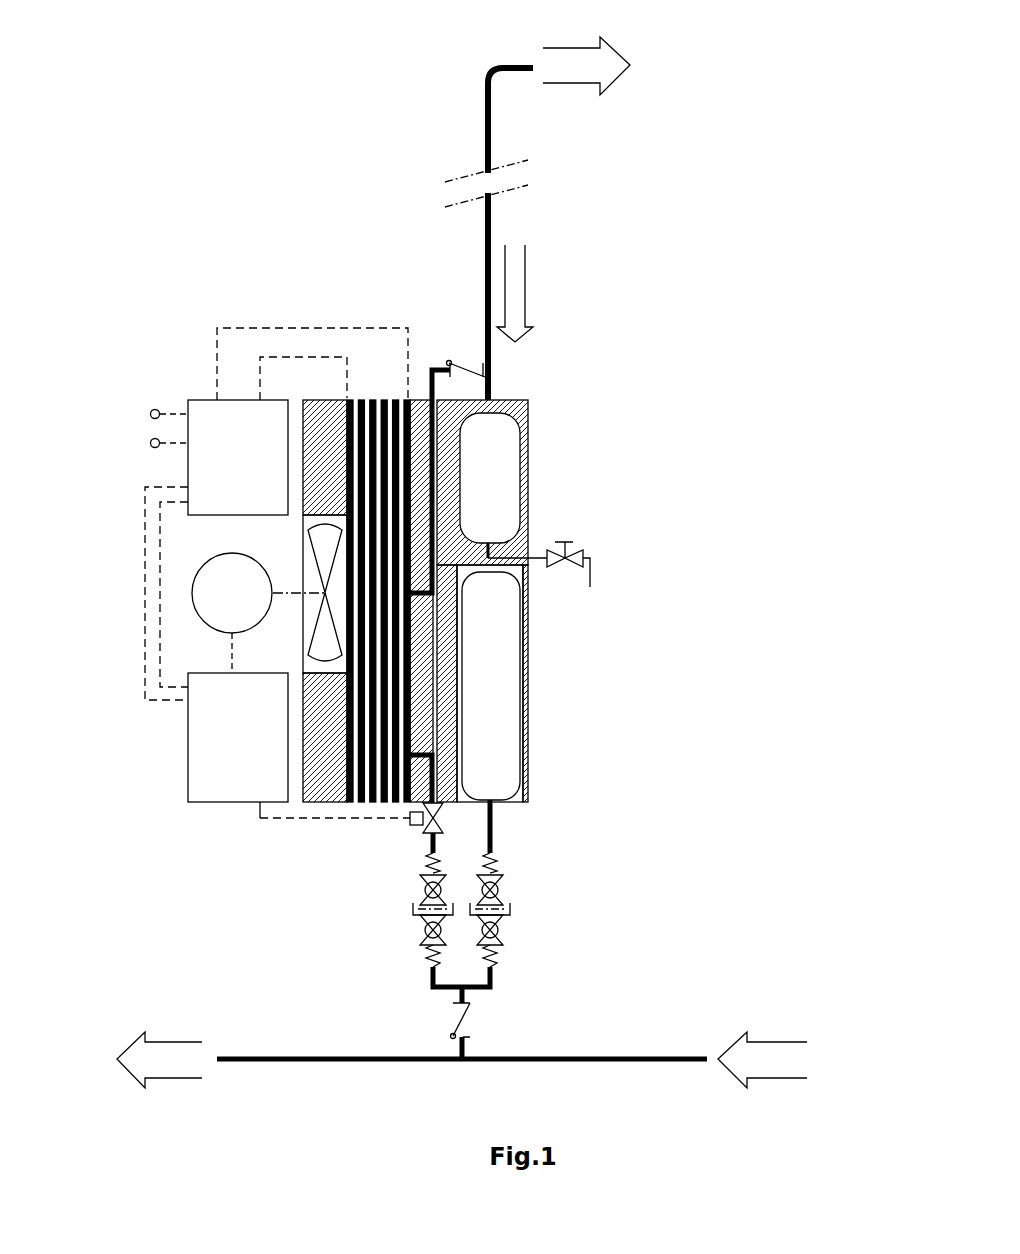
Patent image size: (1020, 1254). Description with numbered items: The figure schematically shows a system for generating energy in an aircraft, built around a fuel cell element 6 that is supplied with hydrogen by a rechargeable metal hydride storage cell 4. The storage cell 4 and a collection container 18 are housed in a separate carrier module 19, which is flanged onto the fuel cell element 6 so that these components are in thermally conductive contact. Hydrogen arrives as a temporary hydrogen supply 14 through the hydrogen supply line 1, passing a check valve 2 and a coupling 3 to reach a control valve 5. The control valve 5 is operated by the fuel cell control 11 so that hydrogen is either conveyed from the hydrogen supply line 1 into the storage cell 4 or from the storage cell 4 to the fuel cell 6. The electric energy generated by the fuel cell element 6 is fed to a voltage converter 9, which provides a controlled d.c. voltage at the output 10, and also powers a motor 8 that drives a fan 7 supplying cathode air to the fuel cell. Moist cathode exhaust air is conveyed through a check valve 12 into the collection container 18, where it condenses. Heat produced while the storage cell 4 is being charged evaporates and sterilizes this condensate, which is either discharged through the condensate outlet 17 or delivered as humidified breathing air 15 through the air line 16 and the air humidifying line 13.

The hydrogen supply line 1 is at (582, 1059).
The check valve 2 is at (473, 1025).
The coupling 3 is at (513, 912).
The rechargeable metal hydride storage cell 4 is at (490, 718).
The control valve 5 is at (420, 828).
The fuel cell element 6 is at (365, 802).
The fan 7 is at (322, 635).
The motor 8 is at (207, 607).
The voltage converter 9 is at (208, 457).
The output for controlled d.c. voltage 10 is at (152, 430).
The fuel cell control 11 is at (212, 745).
The check valve 12 is at (460, 358).
The air humidifying line 13 is at (483, 110).
The temporary hydrogen supply 14 is at (462, 1060).
The humidified breathing air 15 is at (586, 66).
The air line 16 is at (515, 293).
The condensate outlet 17 is at (573, 547).
The collection container 18 is at (490, 468).
The carrier module 19 is at (515, 403).